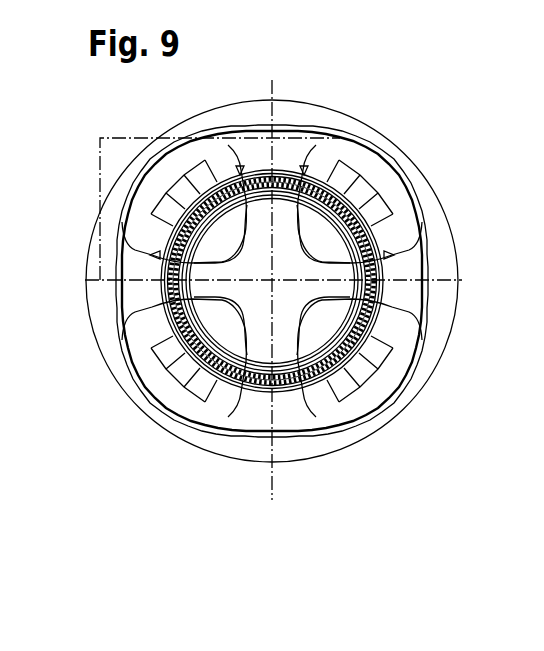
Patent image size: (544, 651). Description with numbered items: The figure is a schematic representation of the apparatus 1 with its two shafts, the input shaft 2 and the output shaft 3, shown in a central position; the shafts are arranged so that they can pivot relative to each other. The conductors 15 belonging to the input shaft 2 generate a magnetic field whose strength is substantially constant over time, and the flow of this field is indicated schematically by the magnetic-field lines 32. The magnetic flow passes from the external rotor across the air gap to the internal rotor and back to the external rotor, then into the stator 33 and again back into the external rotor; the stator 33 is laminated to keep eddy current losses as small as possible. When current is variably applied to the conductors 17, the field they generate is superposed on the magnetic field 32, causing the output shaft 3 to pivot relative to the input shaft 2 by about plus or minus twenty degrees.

The apparatus 1 is at (417, 430).
The input shaft 2 is at (458, 202).
The output shaft 3 is at (378, 281).
The conductors 15 is at (370, 353).
The conductors 17 is at (266, 362).
The magnetic-field lines 32 is at (235, 147).
The stator 33 is at (320, 445).